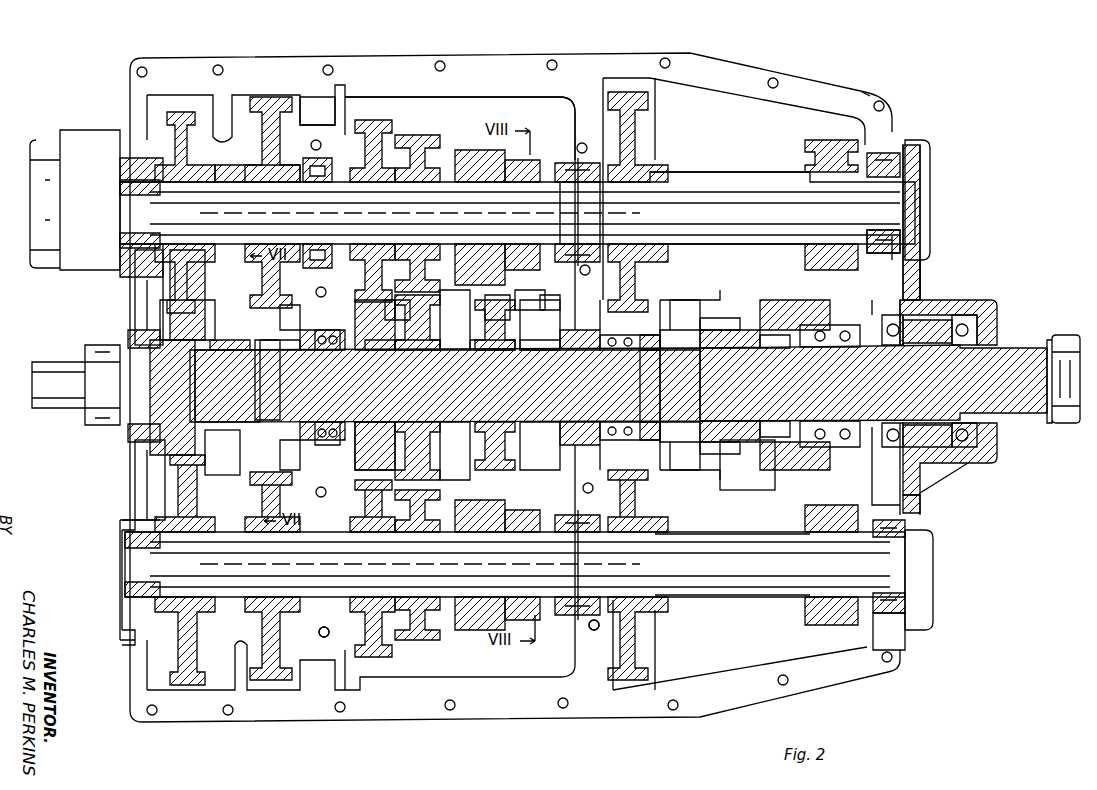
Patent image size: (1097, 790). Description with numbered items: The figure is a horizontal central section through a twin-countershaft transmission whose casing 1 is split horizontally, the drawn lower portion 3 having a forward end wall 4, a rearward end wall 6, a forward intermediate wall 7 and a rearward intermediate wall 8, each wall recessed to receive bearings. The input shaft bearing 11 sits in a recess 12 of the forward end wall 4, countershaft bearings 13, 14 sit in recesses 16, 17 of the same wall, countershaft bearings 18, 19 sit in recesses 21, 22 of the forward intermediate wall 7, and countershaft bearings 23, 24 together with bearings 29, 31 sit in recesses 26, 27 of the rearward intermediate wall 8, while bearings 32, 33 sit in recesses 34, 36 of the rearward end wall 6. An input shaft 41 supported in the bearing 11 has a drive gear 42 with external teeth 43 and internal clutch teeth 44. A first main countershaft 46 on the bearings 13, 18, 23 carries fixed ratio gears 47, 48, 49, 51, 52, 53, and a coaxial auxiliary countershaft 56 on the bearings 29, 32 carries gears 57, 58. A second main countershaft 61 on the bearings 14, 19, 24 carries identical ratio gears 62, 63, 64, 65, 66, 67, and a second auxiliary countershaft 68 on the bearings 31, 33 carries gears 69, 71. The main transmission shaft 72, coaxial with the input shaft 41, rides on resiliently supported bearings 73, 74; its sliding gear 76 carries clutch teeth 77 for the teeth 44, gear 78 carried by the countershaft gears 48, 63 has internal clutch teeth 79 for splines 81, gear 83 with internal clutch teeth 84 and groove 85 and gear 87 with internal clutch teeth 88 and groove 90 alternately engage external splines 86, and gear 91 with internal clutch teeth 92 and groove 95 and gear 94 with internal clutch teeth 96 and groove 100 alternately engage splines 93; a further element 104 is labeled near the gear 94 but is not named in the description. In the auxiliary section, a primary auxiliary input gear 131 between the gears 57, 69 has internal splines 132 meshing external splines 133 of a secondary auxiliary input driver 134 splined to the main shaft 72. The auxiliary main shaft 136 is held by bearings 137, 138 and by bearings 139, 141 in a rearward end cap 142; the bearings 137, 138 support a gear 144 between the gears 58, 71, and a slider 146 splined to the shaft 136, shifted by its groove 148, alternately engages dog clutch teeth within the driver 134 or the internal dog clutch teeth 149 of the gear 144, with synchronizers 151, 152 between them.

The casing 1 is at (836, 82).
The lower portion 3 is at (865, 95).
The forward end wall 4 is at (135, 484).
The rearward end wall 6 is at (888, 485).
The forward intermediate wall 7 is at (325, 118).
The rearward intermediate wall 8 is at (572, 108).
The input shaft bearing 11 is at (125, 335).
The recess 12 is at (149, 297).
The countershaft bearing 13 is at (122, 186).
The countershaft bearing 14 is at (120, 600).
The recess 16 is at (128, 158).
The recess 17 is at (125, 640).
The countershaft bearing 18 is at (310, 195).
The countershaft bearing 19 is at (312, 575).
The recess 21 is at (300, 155).
The recess 22 is at (324, 641).
The countershaft bearing 23 is at (560, 160).
The countershaft bearing 24 is at (570, 612).
The recess 26 is at (588, 275).
The recess 27 is at (586, 495).
The bearing 29 is at (605, 196).
The bearing 31 is at (586, 620).
The bearing 32 is at (915, 152).
The bearing 33 is at (920, 612).
The recess 34 is at (882, 255).
The recess 36 is at (889, 631).
The input shaft 41 is at (68, 410).
The drive gear 42 is at (205, 325).
The external teeth 43 is at (205, 310).
The internal clutch teeth 44 is at (190, 362).
The first main countershaft 46 is at (238, 190).
The countershaft ratio gear 47 is at (180, 112).
The countershaft ratio gear 48 is at (275, 97).
The countershaft ratio gear 49 is at (385, 132).
The countershaft ratio gear 51 is at (420, 136).
The countershaft ratio gear 52 is at (478, 152).
The countershaft ratio gear 53 is at (520, 160).
The auxiliary countershaft 56 is at (700, 180).
The gear 57 is at (648, 104).
The gear 58 is at (805, 148).
The second main countershaft 61 is at (238, 535).
The second countershaft ratio gear 62 is at (205, 680).
The second countershaft ratio gear 63 is at (284, 680).
The second countershaft ratio gear 64 is at (385, 650).
The second countershaft ratio gear 65 is at (435, 638).
The second countershaft ratio gear 66 is at (488, 622).
The second countershaft ratio gear 67 is at (525, 615).
The second auxiliary countershaft 68 is at (730, 532).
The gear 69 is at (650, 663).
The gear 71 is at (812, 612).
The main transmission shaft 72 is at (455, 387).
The bearing 73 is at (303, 387).
The bearing 74 is at (580, 352).
The main shaft gear 76 is at (222, 452).
The clutch teeth 77 is at (228, 337).
The gear 78 is at (258, 355).
The internal clutch teeth 79 is at (288, 355).
The splines 81 is at (310, 388).
The main shaft gear 83 is at (375, 385).
The internal clutch teeth 84 is at (375, 350).
The groove 85 is at (394, 309).
The external splines 86 is at (375, 422).
The gear 87 is at (420, 350).
The internal clutch teeth 88 is at (415, 360).
The groove 90 is at (406, 309).
The main shaft gear 91 is at (470, 305).
The internal clutch teeth 92 is at (485, 352).
The main shaft splines 93 is at (515, 355).
The main shaft gear 94 is at (540, 322).
The groove 95 is at (497, 306).
The internal clutch teeth 96 is at (542, 350).
The groove 100 is at (520, 294).
The clutch element 104 is at (580, 310).
The primary auxiliary input gear 131 is at (622, 352).
The internal splines 132 is at (648, 352).
The external splines 133 is at (640, 380).
The secondary auxiliary input driver 134 is at (680, 330).
The auxiliary main shaft 136 is at (820, 380).
The bearing 137 is at (813, 325).
The bearing 138 is at (888, 348).
The bearing 139 is at (950, 350).
The bearing 141 is at (955, 345).
The rearward end cap 142 is at (920, 270).
The gear 144 is at (805, 300).
The slider 146 is at (755, 330).
The groove 148 is at (718, 330).
The internal dog clutch teeth 149 is at (790, 345).
The synchronizer 151 is at (712, 296).
The synchronizer 152 is at (775, 462).